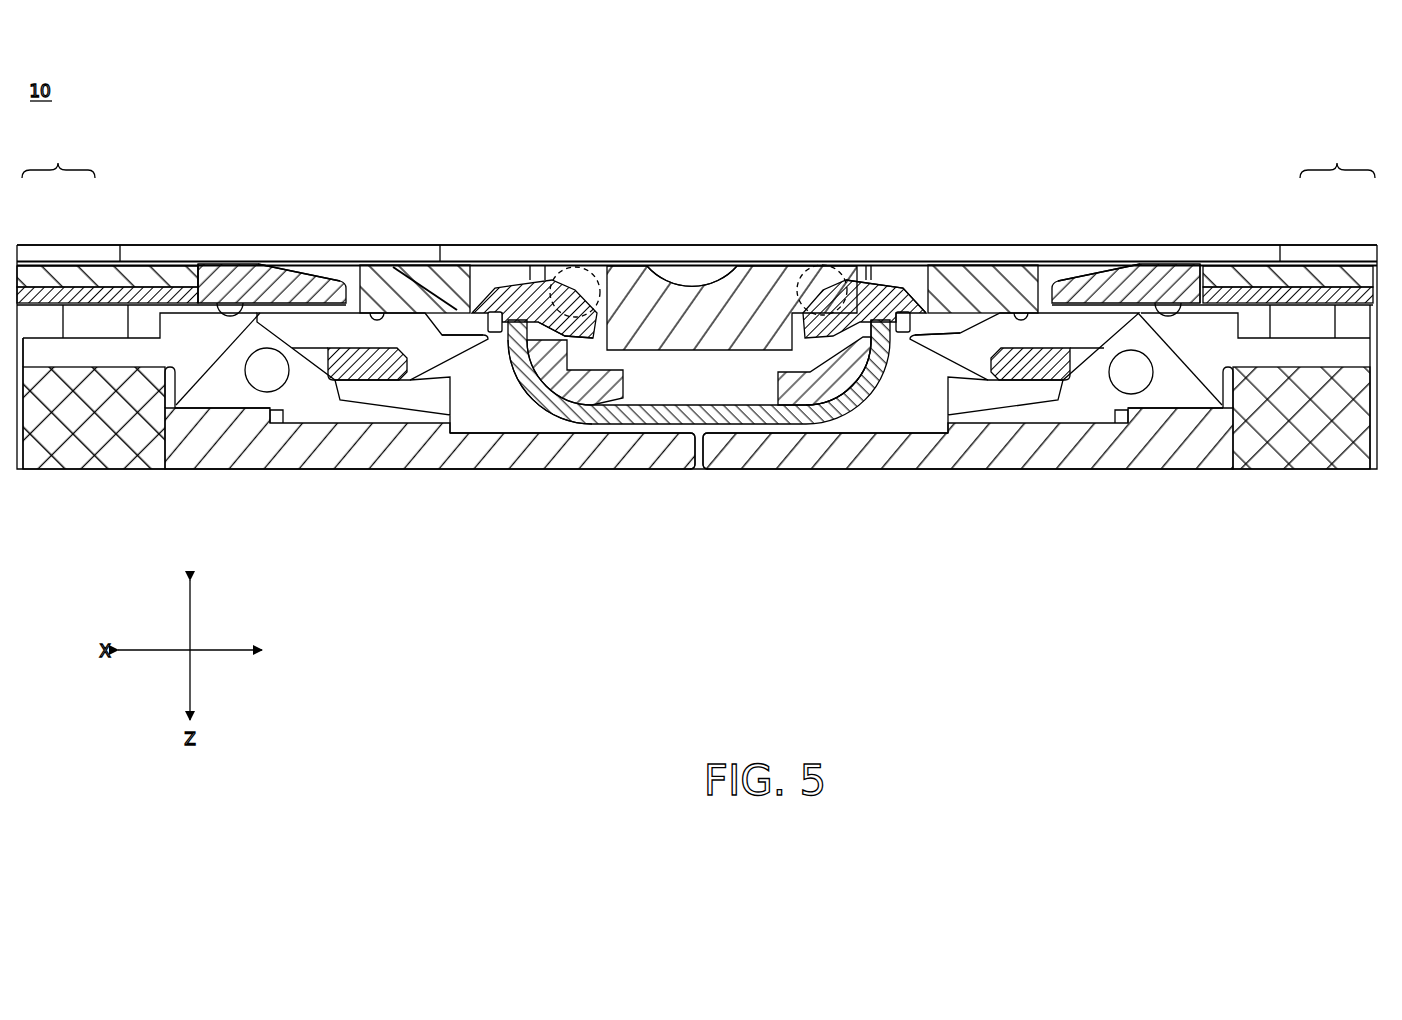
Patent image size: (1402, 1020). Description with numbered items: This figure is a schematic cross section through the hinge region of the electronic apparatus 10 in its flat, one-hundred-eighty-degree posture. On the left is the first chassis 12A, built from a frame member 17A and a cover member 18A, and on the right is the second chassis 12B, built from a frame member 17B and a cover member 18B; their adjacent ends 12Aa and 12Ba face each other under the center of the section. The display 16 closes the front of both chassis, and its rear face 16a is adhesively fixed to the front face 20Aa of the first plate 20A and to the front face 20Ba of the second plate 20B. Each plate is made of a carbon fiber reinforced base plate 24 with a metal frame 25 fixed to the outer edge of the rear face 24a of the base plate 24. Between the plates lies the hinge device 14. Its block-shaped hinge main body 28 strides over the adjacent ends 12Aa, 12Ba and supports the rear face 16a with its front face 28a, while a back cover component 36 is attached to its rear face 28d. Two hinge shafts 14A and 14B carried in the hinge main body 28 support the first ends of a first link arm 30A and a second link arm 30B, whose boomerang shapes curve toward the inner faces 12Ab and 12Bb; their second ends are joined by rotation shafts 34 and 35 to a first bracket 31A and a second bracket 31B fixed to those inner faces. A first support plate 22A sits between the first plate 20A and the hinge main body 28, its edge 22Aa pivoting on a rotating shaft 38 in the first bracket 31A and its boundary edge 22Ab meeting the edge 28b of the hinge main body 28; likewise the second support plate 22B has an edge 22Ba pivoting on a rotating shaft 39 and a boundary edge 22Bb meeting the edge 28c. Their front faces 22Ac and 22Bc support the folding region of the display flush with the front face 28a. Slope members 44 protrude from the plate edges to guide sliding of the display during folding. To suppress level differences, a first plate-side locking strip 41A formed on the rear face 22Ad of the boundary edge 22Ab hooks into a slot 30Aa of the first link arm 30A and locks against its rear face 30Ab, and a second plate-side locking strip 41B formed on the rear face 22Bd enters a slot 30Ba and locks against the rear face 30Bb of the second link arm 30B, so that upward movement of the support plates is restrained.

The electronic apparatus 10 is at (697, 163).
The first chassis 12A is at (345, 542).
The second chassis 12B is at (1048, 542).
The adjacent end 12Aa is at (708, 458).
The inner face 12Ab is at (574, 436).
The adjacent end 12Ba is at (688, 457).
The inner face 12Bb is at (800, 440).
The hinge device 14 is at (538, 421).
The first hinge shaft 14A is at (588, 272).
The second hinge shaft 14B is at (812, 270).
The display 16 is at (258, 244).
The rear face of display 16a is at (440, 266).
The frame member 17A is at (440, 460).
The frame member 17B is at (958, 460).
The cover member 18A is at (85, 460).
The cover member 18B is at (1305, 460).
The first plate 20A is at (58, 160).
The second plate 20B is at (1337, 160).
The front face 20Aa is at (167, 262).
The front face 20Ba is at (1232, 262).
The first support plate 22A is at (372, 300).
The second support plate 22B is at (1010, 300).
The edge 22Aa is at (220, 300).
The boundary edge 22Ab is at (525, 286).
The front face 22Ac is at (432, 298).
The rear face 22Ad is at (375, 310).
The edge 22Ba is at (1180, 300).
The boundary edge 22Bb is at (876, 285).
The front face 22Bc is at (966, 298).
The rear face 22Bd is at (1021, 310).
The base plate 24 is at (75, 278).
The rear face 24a is at (30, 372).
The metal frame 25 is at (30, 275).
The hinge main body 28 is at (735, 290).
The front face 28a is at (645, 275).
The edge 28b is at (555, 300).
The edge 28c is at (838, 300).
The rear face 28d is at (660, 422).
The first link arm 30A is at (360, 395).
The second link arm 30B is at (1035, 395).
The slot 30Aa is at (385, 367).
The rear face 30Ab is at (483, 333).
The slot 30Ba is at (1005, 370).
The rear face 30Bb is at (915, 333).
The first bracket 31A is at (320, 410).
The second bracket 31B is at (1075, 410).
The rotation shaft 34 is at (264, 384).
The rotation shaft 35 is at (1132, 385).
The back cover component 36 is at (612, 398).
The rotating shaft 38 is at (232, 300).
The rotating shaft 39 is at (1166, 300).
The first plate-side locking strip 41A is at (490, 337).
The second plate-side locking strip 41B is at (893, 337).
The slope members 44 is at (305, 280).